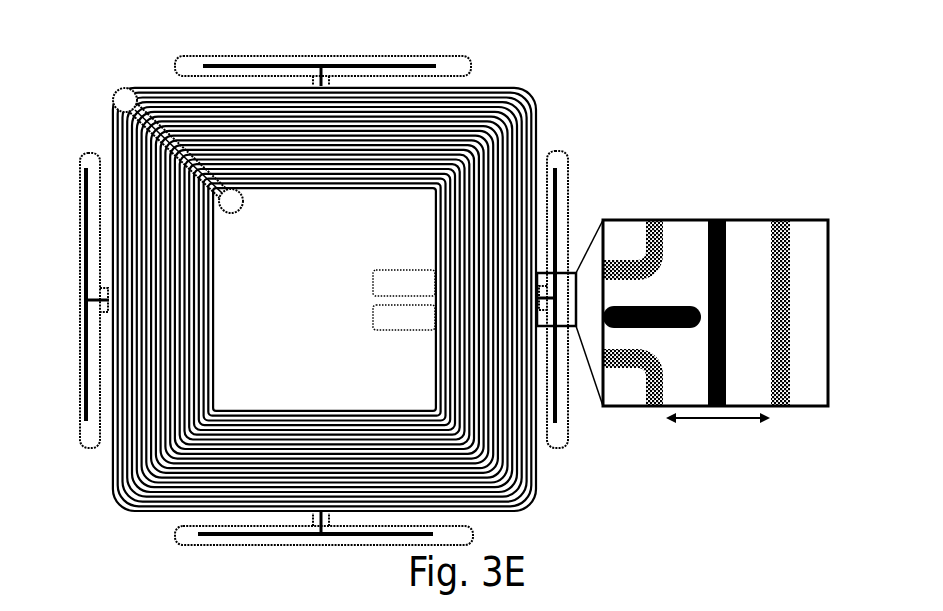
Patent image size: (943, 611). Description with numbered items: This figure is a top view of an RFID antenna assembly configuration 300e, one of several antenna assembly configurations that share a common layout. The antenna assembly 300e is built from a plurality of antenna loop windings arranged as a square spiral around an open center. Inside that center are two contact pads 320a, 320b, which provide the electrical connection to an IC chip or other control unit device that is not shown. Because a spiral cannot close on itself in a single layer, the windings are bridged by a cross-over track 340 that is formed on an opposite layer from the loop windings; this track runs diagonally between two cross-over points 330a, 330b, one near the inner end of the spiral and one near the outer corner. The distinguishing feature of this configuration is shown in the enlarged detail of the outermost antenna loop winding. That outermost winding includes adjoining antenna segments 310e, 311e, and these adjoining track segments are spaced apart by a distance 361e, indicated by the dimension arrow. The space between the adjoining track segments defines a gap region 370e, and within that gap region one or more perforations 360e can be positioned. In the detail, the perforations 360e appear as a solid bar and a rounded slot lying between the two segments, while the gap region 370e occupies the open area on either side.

The RFID antenna assembly configuration 300e is at (295, 299).
The antenna segment 310e is at (645, 211).
The antenna segment 311e is at (772, 211).
The contact pad 320a is at (404, 283).
The contact pad 320b is at (404, 317).
The cross-over point 330a is at (236, 203).
The cross-over point 330b is at (107, 85).
The cross-over track 340 is at (130, 117).
The perforation 360e is at (710, 211).
The distance 361e is at (700, 420).
The gap region 370e is at (635, 290).